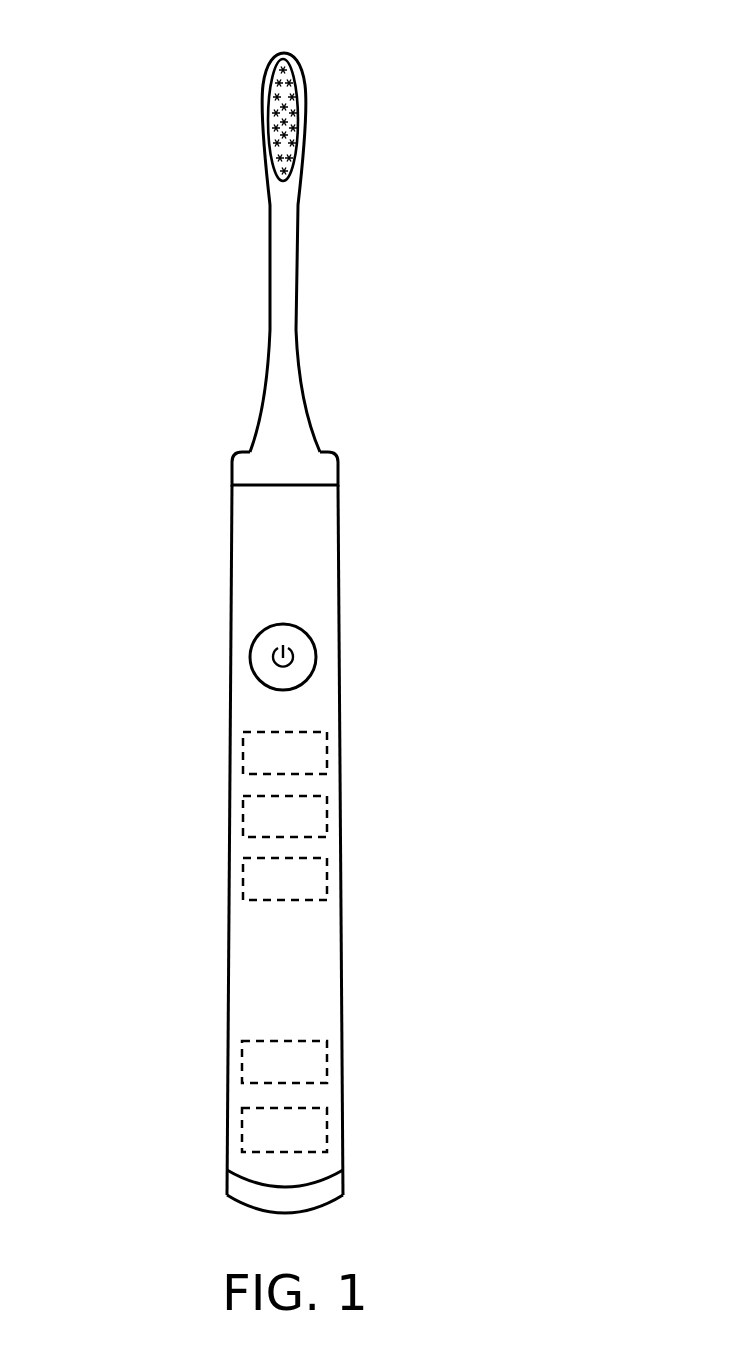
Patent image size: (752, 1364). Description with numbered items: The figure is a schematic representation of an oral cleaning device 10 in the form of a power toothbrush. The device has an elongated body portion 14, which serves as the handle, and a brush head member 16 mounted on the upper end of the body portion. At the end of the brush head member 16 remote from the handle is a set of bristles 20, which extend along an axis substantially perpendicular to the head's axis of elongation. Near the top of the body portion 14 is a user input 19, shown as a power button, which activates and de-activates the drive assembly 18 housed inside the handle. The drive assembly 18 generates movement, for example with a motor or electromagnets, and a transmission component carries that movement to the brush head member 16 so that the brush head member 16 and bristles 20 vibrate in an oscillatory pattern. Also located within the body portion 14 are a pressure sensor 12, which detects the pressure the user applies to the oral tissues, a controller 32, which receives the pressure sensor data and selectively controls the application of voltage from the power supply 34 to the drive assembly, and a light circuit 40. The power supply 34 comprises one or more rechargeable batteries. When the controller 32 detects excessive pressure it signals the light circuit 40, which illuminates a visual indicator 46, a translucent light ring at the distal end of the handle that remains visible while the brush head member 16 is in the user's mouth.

The oral cleaning device 10 is at (90, 72).
The pressure sensor 12 is at (328, 873).
The body portion 14 is at (339, 568).
The brush head member 16 is at (210, 55).
The drive assembly 18 is at (328, 745).
The user input 19 is at (308, 657).
The bristles 20 is at (306, 127).
The controller 32 is at (328, 809).
The power supply 34 is at (328, 1055).
The light circuit 40 is at (328, 1122).
The visual indicator 46 is at (324, 1192).